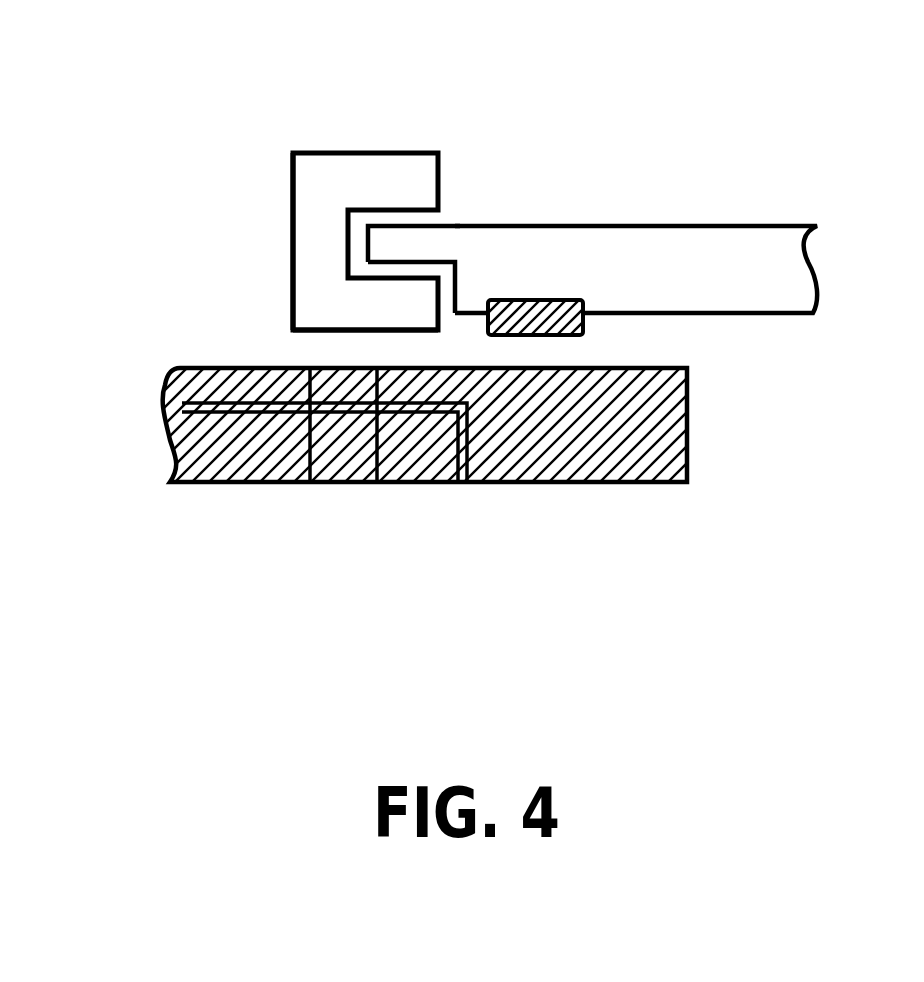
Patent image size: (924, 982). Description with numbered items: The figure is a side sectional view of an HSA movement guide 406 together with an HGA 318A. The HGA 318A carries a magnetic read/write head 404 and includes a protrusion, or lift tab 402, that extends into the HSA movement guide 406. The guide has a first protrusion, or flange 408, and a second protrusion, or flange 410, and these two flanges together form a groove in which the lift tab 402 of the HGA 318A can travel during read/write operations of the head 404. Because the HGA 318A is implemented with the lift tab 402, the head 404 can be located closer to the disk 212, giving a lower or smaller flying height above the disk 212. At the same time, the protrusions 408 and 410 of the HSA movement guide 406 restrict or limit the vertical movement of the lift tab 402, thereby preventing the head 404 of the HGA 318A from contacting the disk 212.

The disk 212 is at (687, 430).
The HGA 318A is at (705, 262).
The protrusion (lift tab) 402 is at (415, 245).
The magnetic head 404 is at (535, 300).
The HSA movement guide 406 is at (293, 225).
The first protrusion (flange) 408 is at (367, 153).
The second protrusion (flange) 410 is at (350, 332).